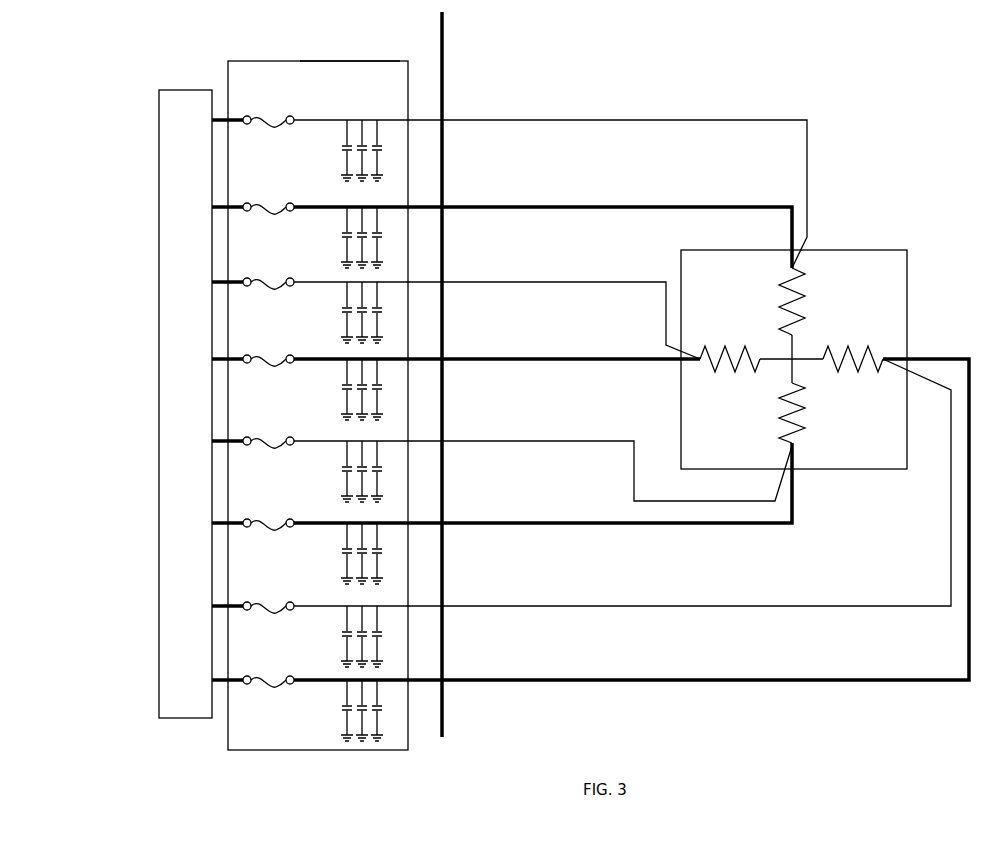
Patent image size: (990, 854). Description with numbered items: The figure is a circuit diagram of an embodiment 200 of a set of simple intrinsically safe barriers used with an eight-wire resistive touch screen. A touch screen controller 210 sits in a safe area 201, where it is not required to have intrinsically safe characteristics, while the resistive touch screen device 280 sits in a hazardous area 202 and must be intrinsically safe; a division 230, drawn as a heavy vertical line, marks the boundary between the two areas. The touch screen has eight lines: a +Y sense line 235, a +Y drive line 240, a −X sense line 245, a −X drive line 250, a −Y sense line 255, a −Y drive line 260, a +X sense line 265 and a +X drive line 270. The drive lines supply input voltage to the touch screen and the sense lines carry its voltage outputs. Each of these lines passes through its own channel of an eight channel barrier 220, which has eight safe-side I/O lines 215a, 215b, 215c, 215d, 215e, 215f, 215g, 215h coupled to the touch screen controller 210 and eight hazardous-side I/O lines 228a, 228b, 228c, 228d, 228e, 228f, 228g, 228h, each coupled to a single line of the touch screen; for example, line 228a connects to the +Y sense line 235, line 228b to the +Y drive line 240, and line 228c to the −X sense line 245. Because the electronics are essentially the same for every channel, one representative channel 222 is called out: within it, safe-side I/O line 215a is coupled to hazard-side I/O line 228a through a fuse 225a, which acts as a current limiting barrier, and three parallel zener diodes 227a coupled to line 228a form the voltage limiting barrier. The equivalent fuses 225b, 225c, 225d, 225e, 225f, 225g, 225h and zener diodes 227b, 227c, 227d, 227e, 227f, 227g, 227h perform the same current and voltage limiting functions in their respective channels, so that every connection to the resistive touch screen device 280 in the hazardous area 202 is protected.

The embodiment 200 is at (820, 60).
The safe area 201 is at (250, 42).
The hazardous area 202 is at (680, 48).
The touch screen controller 210 is at (182, 87).
The safe-side I/O line 215a is at (222, 116).
The safe-side I/O line 215b is at (222, 203).
The safe-side I/O line 215c is at (222, 278).
The safe-side I/O line 215d is at (222, 355).
The safe-side I/O line 215e is at (222, 437).
The safe-side I/O line 215f is at (222, 519).
The safe-side I/O line 215g is at (222, 602).
The safe-side I/O line 215h is at (222, 676).
The eight channel barrier 220 is at (355, 58).
The channel 222 is at (354, 106).
The fuse 225a is at (277, 116).
The fuse 225b is at (277, 203).
The fuse 225c is at (277, 278).
The fuse 225d is at (277, 355).
The fuse 225e is at (277, 437).
The fuse 225f is at (277, 519).
The fuse 225g is at (277, 602).
The fuse 225h is at (277, 676).
The zener diodes 227a is at (398, 148).
The zener diodes 227b is at (398, 235).
The zener diodes 227c is at (398, 310).
The zener diodes 227d is at (398, 387).
The zener diodes 227e is at (398, 469).
The zener diodes 227f is at (398, 551).
The zener diodes 227g is at (398, 634).
The zener diodes 227h is at (398, 708).
The hazardous-side I/O line 228a is at (428, 120).
The hazardous-side I/O line 228b is at (428, 207).
The hazardous-side I/O line 228c is at (428, 282).
The hazardous-side I/O line 228d is at (428, 359).
The hazardous-side I/O line 228e is at (428, 441).
The hazardous-side I/O line 228f is at (428, 523).
The hazardous-side I/O line 228g is at (428, 606).
The hazardous-side I/O line 228h is at (428, 680).
The division 230 is at (449, 42).
The +Y sense line 235 is at (702, 118).
The +Y drive line 240 is at (703, 205).
The −X sense line 245 is at (576, 280).
The −X drive line 250 is at (576, 356).
The −Y sense line 255 is at (574, 438).
The −Y drive line 260 is at (576, 520).
The +X sense line 265 is at (576, 603).
The +X drive line 270 is at (576, 677).
The resistive touch screen device 280 is at (875, 248).